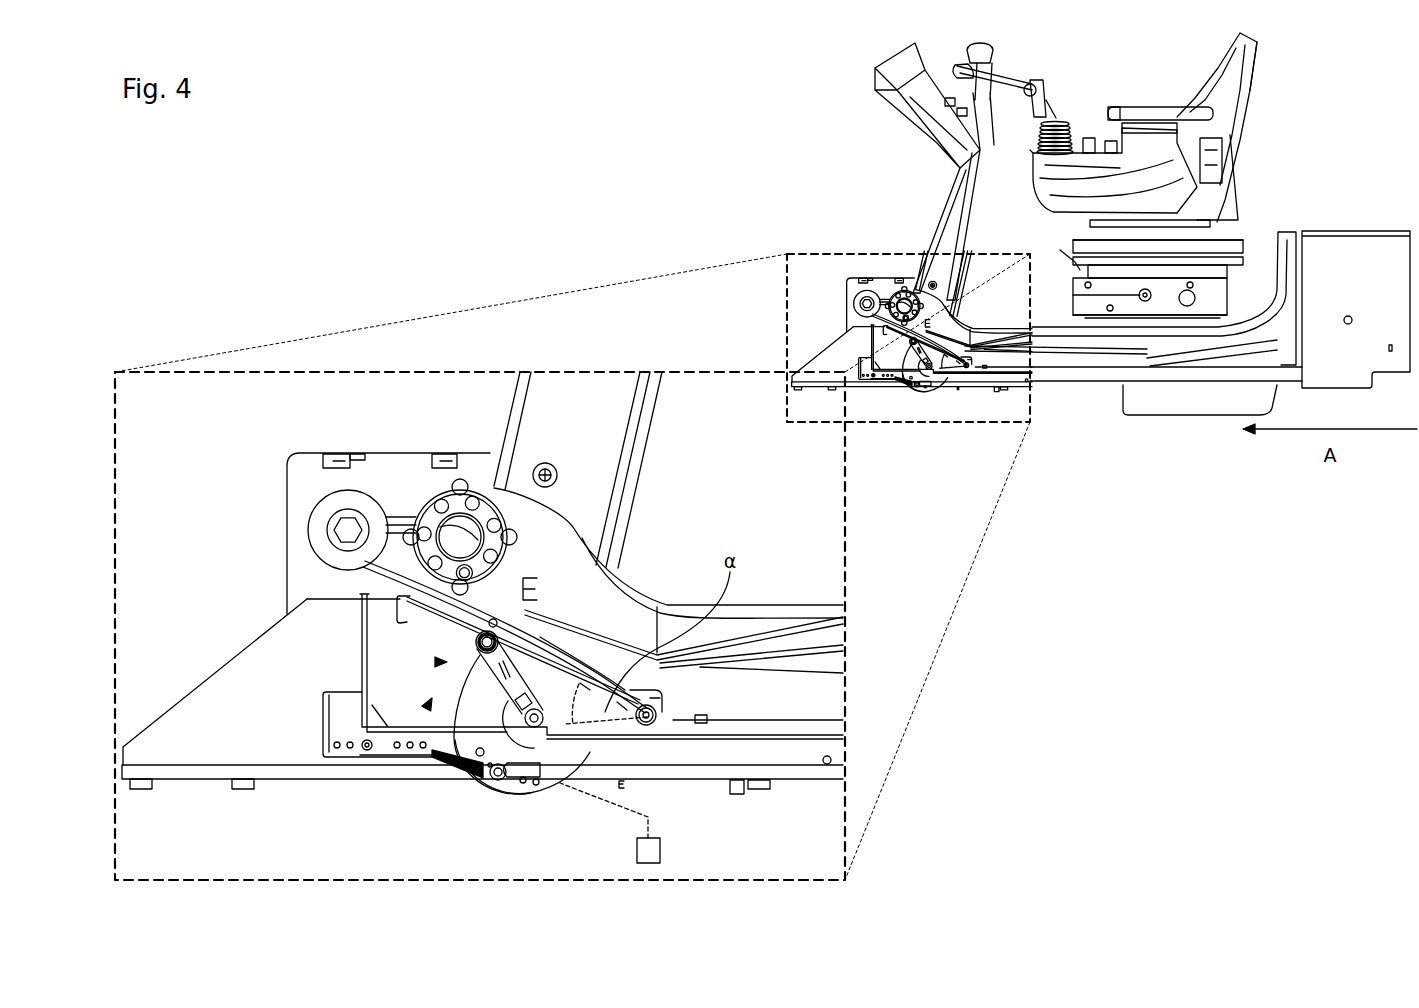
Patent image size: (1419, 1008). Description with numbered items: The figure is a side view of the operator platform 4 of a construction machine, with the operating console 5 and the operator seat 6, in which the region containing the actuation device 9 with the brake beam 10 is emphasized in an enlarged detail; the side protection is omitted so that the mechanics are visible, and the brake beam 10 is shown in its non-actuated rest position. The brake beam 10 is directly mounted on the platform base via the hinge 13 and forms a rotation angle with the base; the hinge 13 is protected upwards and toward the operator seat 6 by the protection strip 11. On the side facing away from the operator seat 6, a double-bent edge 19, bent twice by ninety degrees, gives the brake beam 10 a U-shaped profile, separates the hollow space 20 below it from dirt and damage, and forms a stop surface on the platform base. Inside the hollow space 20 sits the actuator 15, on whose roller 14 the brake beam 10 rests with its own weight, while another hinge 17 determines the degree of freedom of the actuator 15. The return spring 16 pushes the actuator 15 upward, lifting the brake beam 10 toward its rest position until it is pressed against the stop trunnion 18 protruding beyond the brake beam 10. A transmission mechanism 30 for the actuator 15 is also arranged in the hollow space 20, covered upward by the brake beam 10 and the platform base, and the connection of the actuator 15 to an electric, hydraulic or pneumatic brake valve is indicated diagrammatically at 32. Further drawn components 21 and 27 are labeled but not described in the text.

The operator platform 4 is at (1101, 98).
The operating console 5 is at (940, 213).
The operator seat 6 is at (1172, 278).
The actuation device 9 is at (580, 648).
The brake beam 10 is at (535, 645).
The protection strip 11 is at (652, 708).
The hinge 13 is at (647, 724).
The roller 14 is at (476, 643).
The actuator 15 is at (497, 778).
The return spring 16 is at (452, 772).
The hinge 17 is at (561, 786).
The stop trunnion 18 is at (493, 619).
The double-bent edge 19 is at (337, 600).
The hollow space 20 is at (430, 706).
The stop pin 21 is at (537, 786).
The fastening element 27 is at (736, 796).
The transmission mechanism 30 is at (440, 662).
The brake valve connection 32 is at (650, 865).